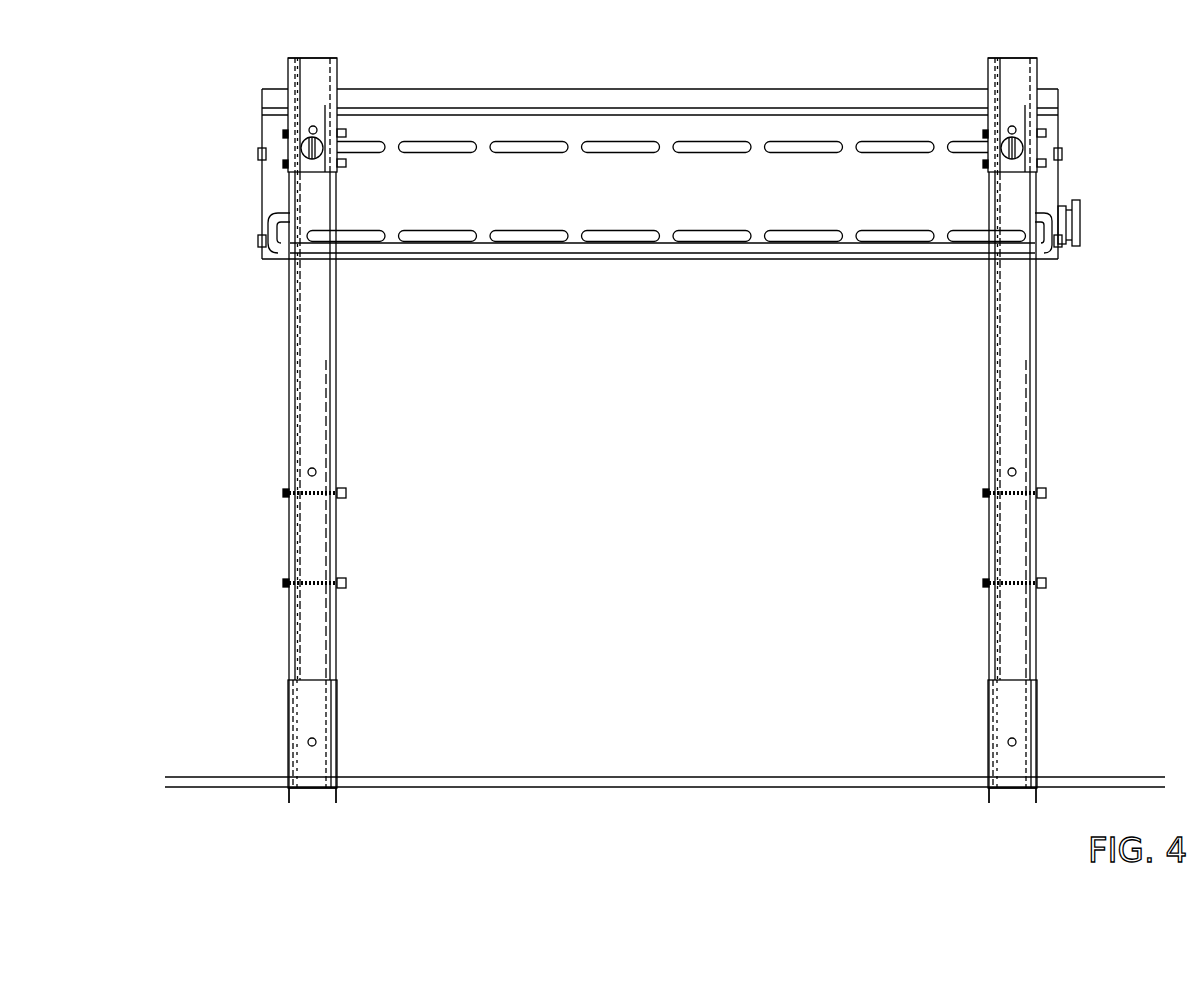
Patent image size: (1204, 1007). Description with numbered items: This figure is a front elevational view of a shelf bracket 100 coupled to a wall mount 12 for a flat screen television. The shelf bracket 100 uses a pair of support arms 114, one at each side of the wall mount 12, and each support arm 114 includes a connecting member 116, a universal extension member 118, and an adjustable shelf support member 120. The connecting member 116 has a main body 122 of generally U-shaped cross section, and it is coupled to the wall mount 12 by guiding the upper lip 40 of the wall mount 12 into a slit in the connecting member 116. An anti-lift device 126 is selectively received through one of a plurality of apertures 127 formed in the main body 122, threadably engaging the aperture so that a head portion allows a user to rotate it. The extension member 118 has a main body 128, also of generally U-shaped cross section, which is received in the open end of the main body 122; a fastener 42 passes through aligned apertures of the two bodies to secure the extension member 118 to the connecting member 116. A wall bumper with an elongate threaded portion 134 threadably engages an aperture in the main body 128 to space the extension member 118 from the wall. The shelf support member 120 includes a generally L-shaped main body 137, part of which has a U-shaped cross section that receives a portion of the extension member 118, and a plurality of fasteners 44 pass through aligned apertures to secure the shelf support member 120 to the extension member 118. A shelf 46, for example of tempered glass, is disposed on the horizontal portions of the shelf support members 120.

The shelf bracket 100 is at (188, 74).
The wall mount 12 is at (662, 86).
The upper lip 40 is at (750, 88).
The fastener 42 is at (347, 163).
The fasteners 44 is at (348, 493).
The shelf 46 is at (642, 777).
The support arm 114 is at (347, 377).
The connecting member 116 is at (340, 56).
The universal extension member 118 is at (286, 405).
The adjustable shelf support member 120 is at (286, 693).
The main body 122 is at (288, 70).
The anti-lift device 126 is at (298, 147).
The apertures 127 is at (309, 128).
The main body 128 is at (306, 330).
The elongate threaded portion 134 is at (308, 471).
The main body 137 is at (318, 715).